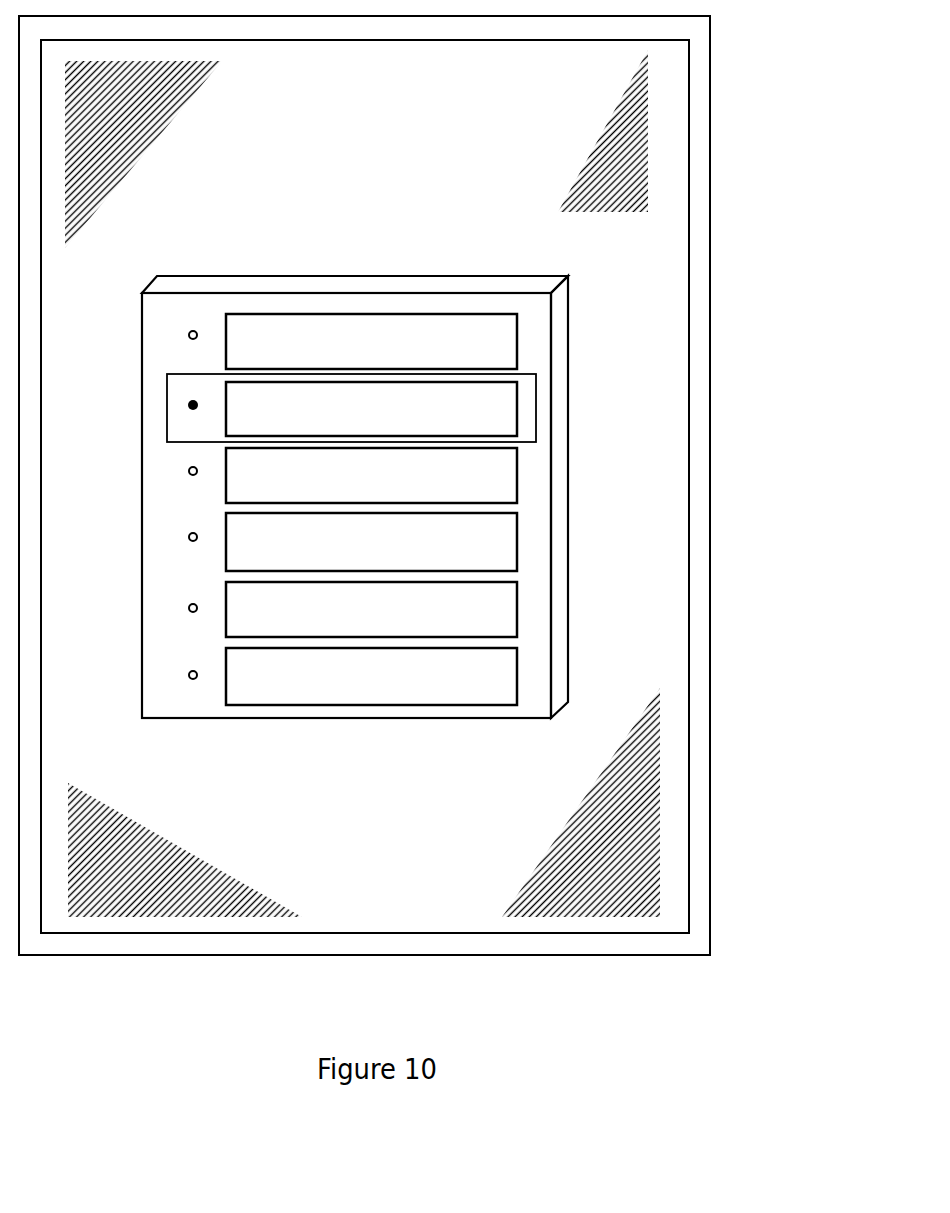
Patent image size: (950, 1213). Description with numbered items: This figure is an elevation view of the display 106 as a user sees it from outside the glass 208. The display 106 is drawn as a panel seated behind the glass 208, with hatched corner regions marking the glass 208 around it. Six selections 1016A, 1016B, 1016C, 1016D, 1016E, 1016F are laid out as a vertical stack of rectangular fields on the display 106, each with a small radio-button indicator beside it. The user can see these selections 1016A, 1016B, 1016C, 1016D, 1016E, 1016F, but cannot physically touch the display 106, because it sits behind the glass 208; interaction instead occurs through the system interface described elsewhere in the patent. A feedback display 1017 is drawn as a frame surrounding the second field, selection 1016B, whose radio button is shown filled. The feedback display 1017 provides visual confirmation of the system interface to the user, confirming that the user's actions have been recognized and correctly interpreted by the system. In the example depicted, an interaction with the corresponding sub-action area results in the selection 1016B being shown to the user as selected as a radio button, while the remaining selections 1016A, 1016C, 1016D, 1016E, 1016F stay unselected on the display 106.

The glass 208 is at (655, 116).
The display 106 is at (497, 281).
The feedback display 1017 is at (165, 408).
The selection 1016A is at (517, 342).
The selection 1016B is at (517, 410).
The selection 1016C is at (517, 475).
The selection 1016D is at (517, 543).
The selection 1016E is at (517, 610).
The selection 1016F is at (517, 677).